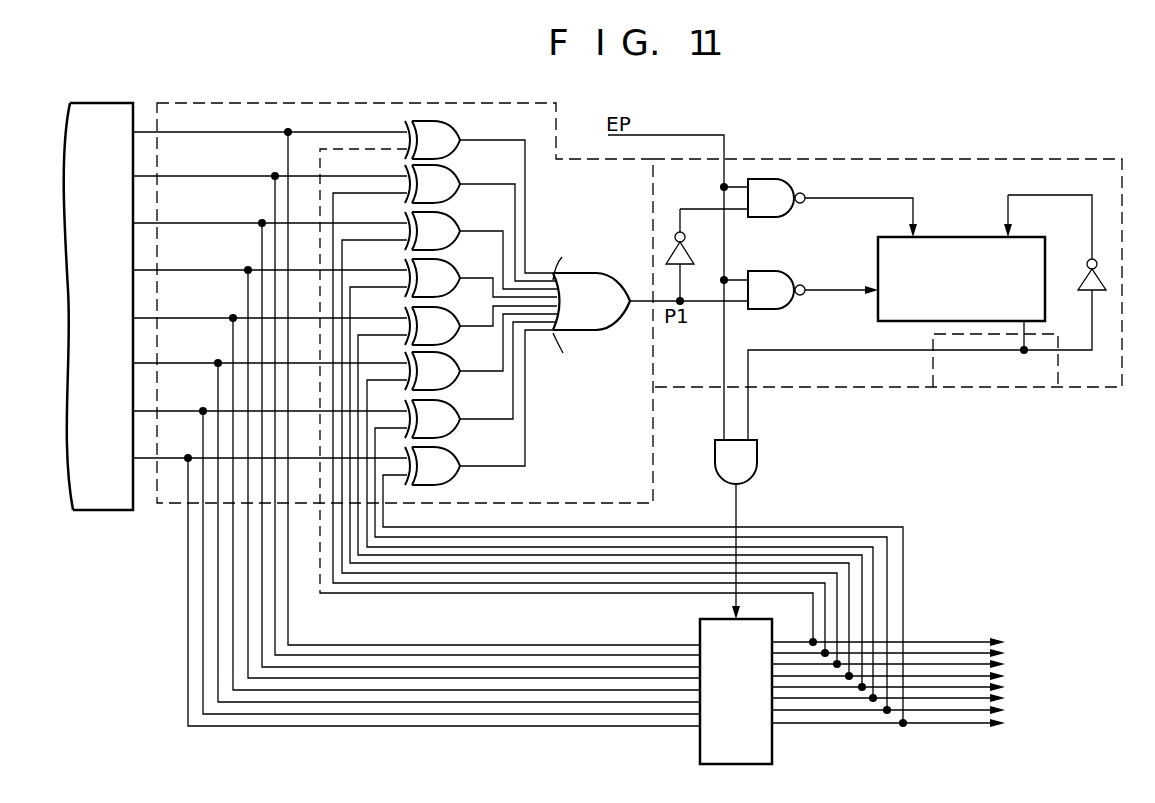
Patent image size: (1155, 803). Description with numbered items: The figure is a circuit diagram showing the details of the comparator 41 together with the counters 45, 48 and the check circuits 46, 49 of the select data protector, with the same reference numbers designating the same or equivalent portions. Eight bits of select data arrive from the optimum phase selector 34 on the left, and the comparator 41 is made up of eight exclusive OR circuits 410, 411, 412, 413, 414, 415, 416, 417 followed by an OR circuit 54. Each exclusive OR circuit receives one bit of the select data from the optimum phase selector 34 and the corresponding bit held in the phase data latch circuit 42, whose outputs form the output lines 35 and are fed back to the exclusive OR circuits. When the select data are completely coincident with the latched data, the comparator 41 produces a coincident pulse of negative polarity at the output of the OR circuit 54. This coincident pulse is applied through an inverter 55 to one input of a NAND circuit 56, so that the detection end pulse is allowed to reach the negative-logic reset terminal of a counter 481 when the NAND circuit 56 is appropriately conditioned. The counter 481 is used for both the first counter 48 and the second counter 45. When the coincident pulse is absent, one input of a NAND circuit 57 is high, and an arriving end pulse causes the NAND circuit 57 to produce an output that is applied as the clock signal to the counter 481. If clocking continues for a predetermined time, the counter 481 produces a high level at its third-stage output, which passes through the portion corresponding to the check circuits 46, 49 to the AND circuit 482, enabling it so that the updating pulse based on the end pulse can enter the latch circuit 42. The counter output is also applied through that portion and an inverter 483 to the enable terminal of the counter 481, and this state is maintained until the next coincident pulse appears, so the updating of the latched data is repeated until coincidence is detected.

The optimum phase selector 34 is at (110, 512).
The output lines 35 is at (916, 682).
The comparator 41 is at (655, 480).
The phase data latch circuit 42 is at (698, 633).
The first counter 48 is at (887, 249).
The second counter 45 is at (954, 158).
The first check circuit 49 is at (995, 388).
The check circuit 46 is at (986, 390).
The OR circuit 54 is at (590, 332).
The inverter 55 is at (688, 246).
The NAND circuit 56 is at (790, 216).
The NAND circuit 57 is at (790, 308).
The exclusive OR circuit 410 is at (462, 136).
The exclusive OR circuit 411 is at (462, 184).
The exclusive OR circuit 412 is at (462, 232).
The exclusive OR circuit 413 is at (457, 280).
The exclusive OR circuit 414 is at (459, 335).
The exclusive OR circuit 415 is at (459, 383).
The exclusive OR circuit 416 is at (459, 430).
The exclusive OR circuit 417 is at (459, 478).
The counter 481 is at (945, 236).
The AND circuit 482 is at (760, 455).
The inverter 483 is at (1078, 278).